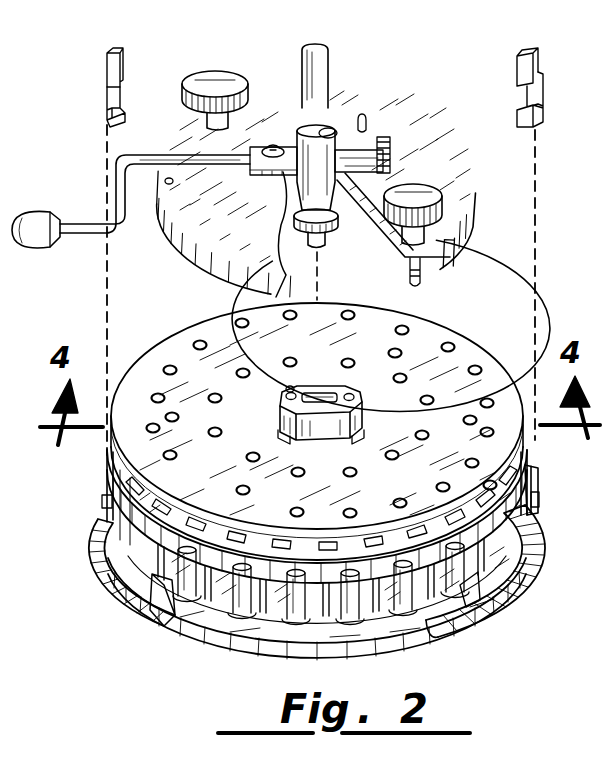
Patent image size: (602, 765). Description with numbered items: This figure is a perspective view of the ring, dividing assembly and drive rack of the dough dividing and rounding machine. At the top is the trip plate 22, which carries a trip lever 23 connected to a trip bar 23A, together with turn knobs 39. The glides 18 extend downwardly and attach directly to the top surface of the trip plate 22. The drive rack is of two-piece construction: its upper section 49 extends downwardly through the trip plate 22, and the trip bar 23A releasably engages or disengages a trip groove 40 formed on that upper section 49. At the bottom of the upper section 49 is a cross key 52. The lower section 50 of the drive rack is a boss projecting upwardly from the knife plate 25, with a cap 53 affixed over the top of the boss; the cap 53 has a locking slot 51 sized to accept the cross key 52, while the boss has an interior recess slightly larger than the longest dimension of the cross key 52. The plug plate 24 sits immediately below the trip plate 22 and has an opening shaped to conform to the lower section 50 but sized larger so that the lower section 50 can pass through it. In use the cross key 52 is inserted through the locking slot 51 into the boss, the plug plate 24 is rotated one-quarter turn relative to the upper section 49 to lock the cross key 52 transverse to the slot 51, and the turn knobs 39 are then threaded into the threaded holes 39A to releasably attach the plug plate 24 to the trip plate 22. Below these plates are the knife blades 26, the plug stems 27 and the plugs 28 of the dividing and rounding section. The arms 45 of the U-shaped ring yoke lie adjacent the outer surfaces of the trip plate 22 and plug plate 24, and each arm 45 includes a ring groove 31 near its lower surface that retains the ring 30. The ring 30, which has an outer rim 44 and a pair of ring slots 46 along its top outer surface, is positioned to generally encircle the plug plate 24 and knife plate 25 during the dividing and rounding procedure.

The glides 18 is at (323, 70).
The trip plate 22 is at (433, 148).
The trip lever 23 is at (33, 212).
The trip bar 23A is at (293, 147).
The plug plate 24 is at (437, 375).
The knife plate 25 is at (127, 462).
The knife blades 26 is at (222, 600).
The plug stems 27 is at (347, 616).
The plugs 28 is at (367, 658).
The ring 30 is at (497, 600).
The ring grooves 31 is at (112, 98).
The turn knobs 39 is at (218, 87).
The threaded holes 39A is at (393, 350).
The trip groove 40 is at (317, 173).
The outer rim 44 is at (108, 550).
The arms 45 is at (122, 63).
The ring slots 46 is at (102, 502).
The upper section 49 is at (330, 143).
The lower section 50 is at (365, 398).
The locking slot 51 is at (320, 394).
The cross key 52 is at (297, 214).
The cap 53 is at (286, 388).